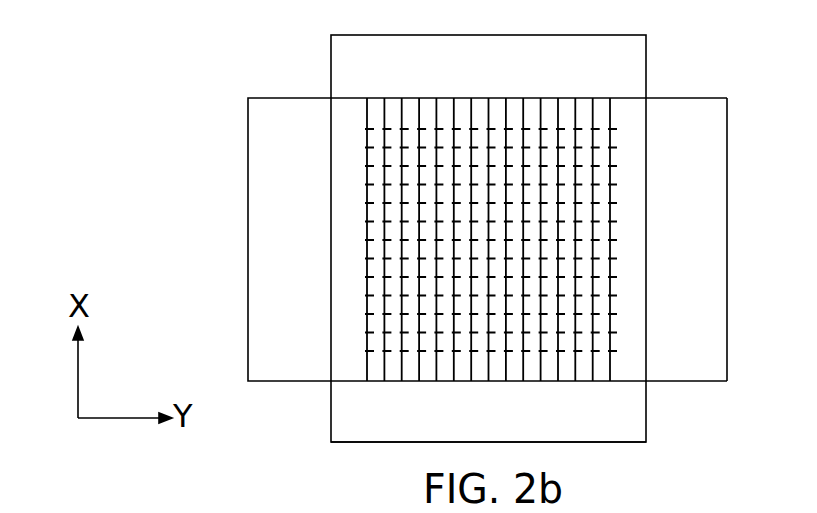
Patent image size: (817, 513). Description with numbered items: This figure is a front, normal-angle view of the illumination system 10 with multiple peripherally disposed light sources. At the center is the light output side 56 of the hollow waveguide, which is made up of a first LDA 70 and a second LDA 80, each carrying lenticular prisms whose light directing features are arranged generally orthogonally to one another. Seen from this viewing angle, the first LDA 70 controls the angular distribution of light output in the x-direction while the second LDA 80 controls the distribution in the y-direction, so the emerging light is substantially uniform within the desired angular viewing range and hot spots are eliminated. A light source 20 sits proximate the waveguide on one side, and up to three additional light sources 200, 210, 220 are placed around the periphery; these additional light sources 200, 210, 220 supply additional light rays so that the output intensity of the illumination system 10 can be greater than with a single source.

The illumination system 10 is at (150, 38).
The light source 20 is at (280, 255).
The light output side 56 is at (575, 158).
The first LDA 70 is at (372, 150).
The second LDA 80 is at (410, 372).
The additional light source 200 is at (597, 435).
The additional light source 210 is at (710, 243).
The additional light source 220 is at (485, 63).